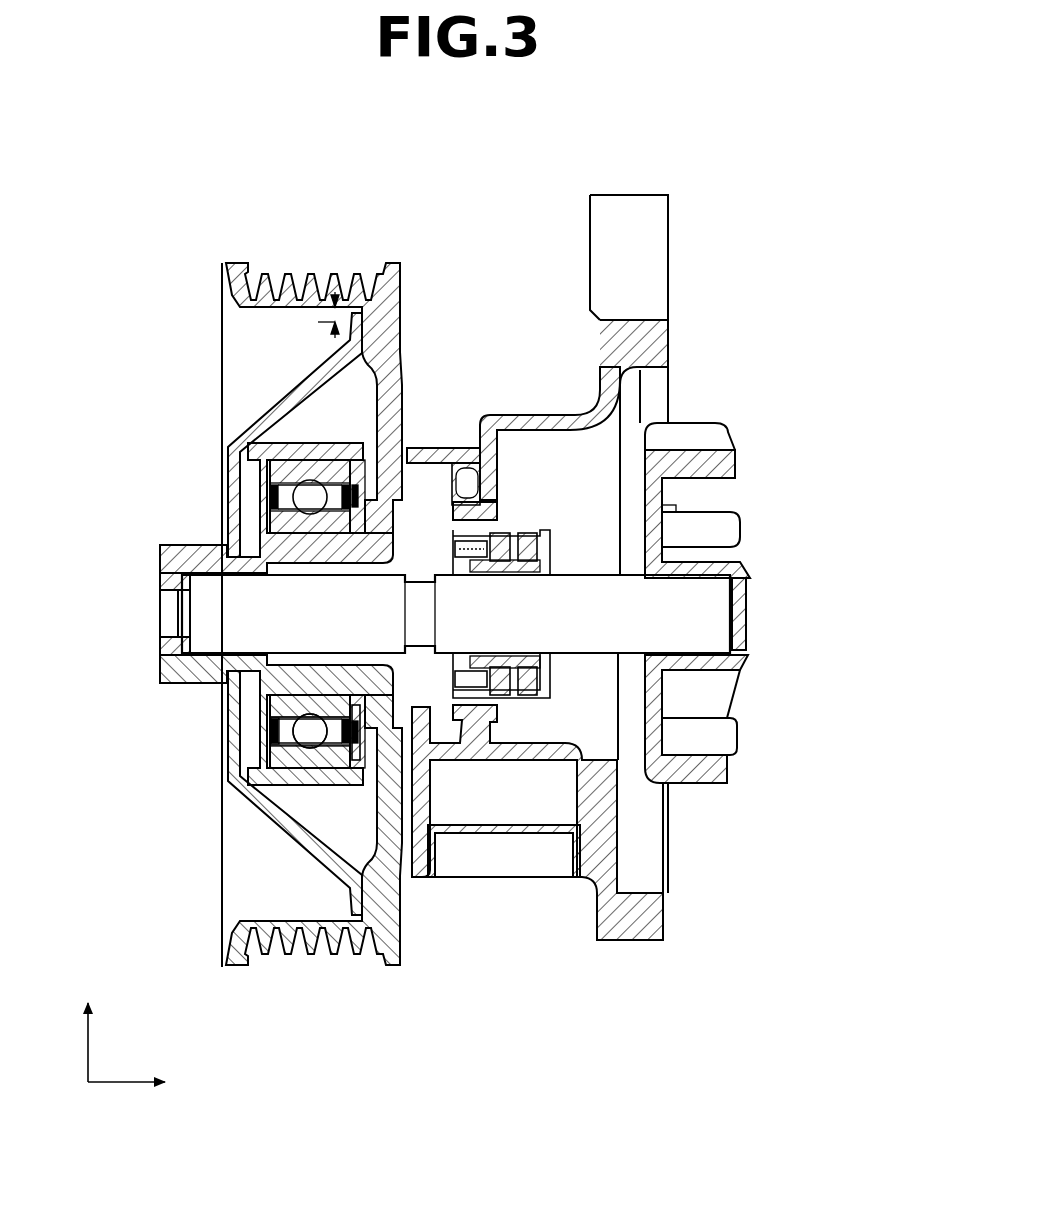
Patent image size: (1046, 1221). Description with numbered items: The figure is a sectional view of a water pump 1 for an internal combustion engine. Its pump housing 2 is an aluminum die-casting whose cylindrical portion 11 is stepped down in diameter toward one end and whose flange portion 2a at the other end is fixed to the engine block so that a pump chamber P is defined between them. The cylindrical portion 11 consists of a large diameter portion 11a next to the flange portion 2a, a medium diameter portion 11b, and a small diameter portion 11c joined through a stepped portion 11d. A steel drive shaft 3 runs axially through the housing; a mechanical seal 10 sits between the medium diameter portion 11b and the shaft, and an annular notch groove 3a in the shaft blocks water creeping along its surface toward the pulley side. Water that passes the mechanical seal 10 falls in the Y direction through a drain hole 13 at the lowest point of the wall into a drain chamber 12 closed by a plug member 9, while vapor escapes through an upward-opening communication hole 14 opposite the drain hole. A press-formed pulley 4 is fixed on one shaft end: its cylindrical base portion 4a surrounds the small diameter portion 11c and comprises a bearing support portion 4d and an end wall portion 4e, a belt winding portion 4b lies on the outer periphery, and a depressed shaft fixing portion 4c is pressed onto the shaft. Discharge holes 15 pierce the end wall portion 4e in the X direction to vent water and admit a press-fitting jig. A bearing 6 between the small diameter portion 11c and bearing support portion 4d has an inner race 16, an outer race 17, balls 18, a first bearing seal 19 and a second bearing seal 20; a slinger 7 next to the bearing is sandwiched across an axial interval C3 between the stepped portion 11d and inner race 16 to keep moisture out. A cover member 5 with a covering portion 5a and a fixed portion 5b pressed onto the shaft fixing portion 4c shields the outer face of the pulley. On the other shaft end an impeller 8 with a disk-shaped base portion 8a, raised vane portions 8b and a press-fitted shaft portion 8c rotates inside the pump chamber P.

The water pump 1 is at (748, 185).
The pump housing 2 is at (672, 925).
The flange portion 2a is at (636, 195).
The drive shaft 3 is at (745, 614).
The notch groove 3a is at (428, 575).
The pulley 4 is at (230, 260).
The cylindrical base portion 4a is at (132, 448).
The belt winding portion 4b is at (290, 278).
The shaft fixing portion 4c is at (180, 578).
The bearing support portion 4d is at (300, 440).
The end wall portion 4e is at (250, 462).
The cover member 5 is at (282, 386).
The covering portion 5a is at (228, 530).
The fixed portion 5b is at (228, 695).
The bearing 6 is at (108, 863).
The slinger 7 is at (378, 738).
The impeller 8 is at (735, 423).
The base portion 8a is at (655, 692).
The vane portions 8b is at (730, 532).
The shaft portion 8c is at (744, 580).
The plug member 9 is at (505, 835).
The mechanical seal 10 is at (542, 520).
The cylindrical portion 11 is at (590, 195).
The large diameter portion 11a is at (545, 410).
The medium diameter portion 11b is at (482, 420).
The small diameter portion 11c is at (380, 500).
The stepped portion 11d is at (432, 500).
The drain chamber 12 is at (470, 805).
The drain hole 13 is at (530, 830).
The communication hole 14 is at (455, 512).
The discharge holes 15 is at (240, 500).
The inner race 16 is at (270, 700).
The outer race 17 is at (272, 760).
The balls 18 is at (280, 770).
The first bearing seal 19 is at (272, 725).
The second bearing seal 20 is at (300, 790).
The interval C3 is at (328, 283).
The pump chamber P is at (652, 815).
The X-axis direction X is at (136, 1085).
The Y-axis direction Y is at (82, 1026).